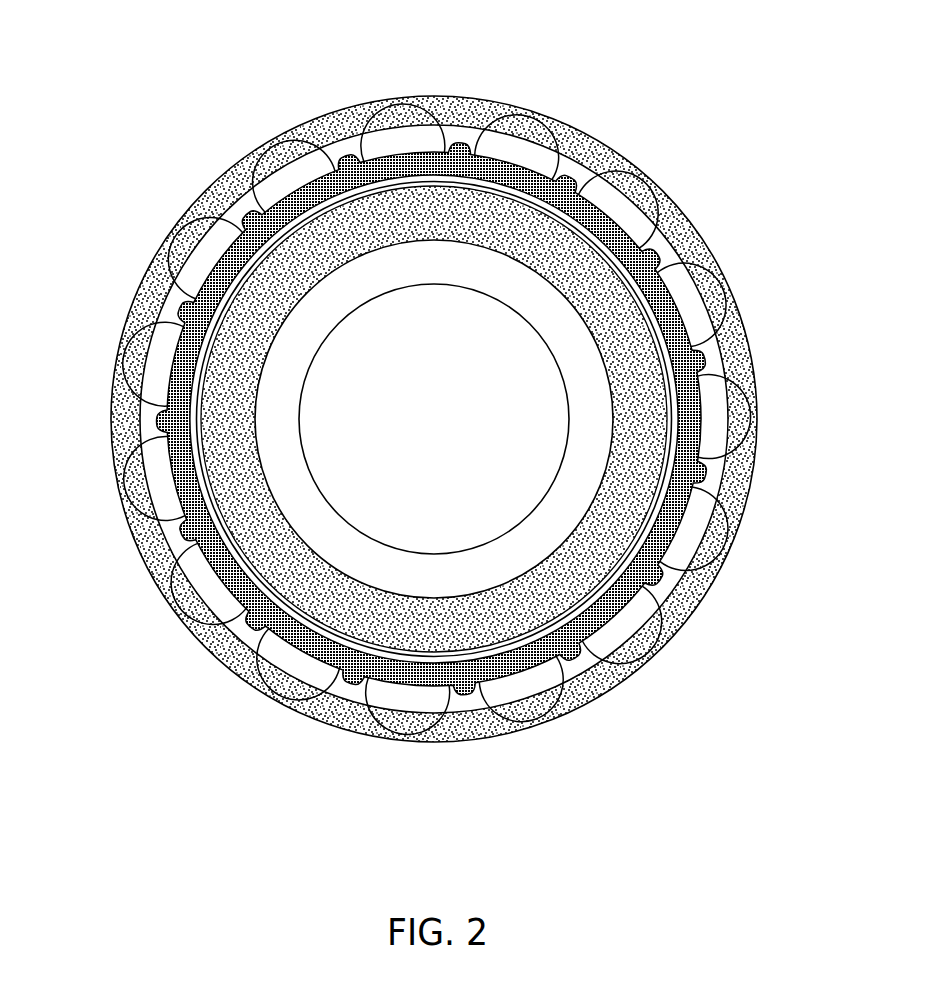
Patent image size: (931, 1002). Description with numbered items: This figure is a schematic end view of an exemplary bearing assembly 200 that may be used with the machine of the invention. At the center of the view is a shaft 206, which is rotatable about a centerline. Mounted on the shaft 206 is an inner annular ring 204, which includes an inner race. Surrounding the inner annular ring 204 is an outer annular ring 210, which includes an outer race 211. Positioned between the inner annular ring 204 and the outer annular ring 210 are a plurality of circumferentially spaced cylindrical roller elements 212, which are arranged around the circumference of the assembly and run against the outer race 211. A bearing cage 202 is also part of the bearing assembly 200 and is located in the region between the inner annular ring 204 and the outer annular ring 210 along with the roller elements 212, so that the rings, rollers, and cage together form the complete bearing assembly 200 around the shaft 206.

The bearing assembly 200 is at (447, 411).
The bearing cage 202 is at (670, 317).
The inner annular ring 204 is at (222, 494).
The shaft 206 is at (573, 483).
The outer annular ring 210 is at (434, 97).
The outer race 211 is at (246, 197).
The cylindrical roller elements 212 is at (410, 703).